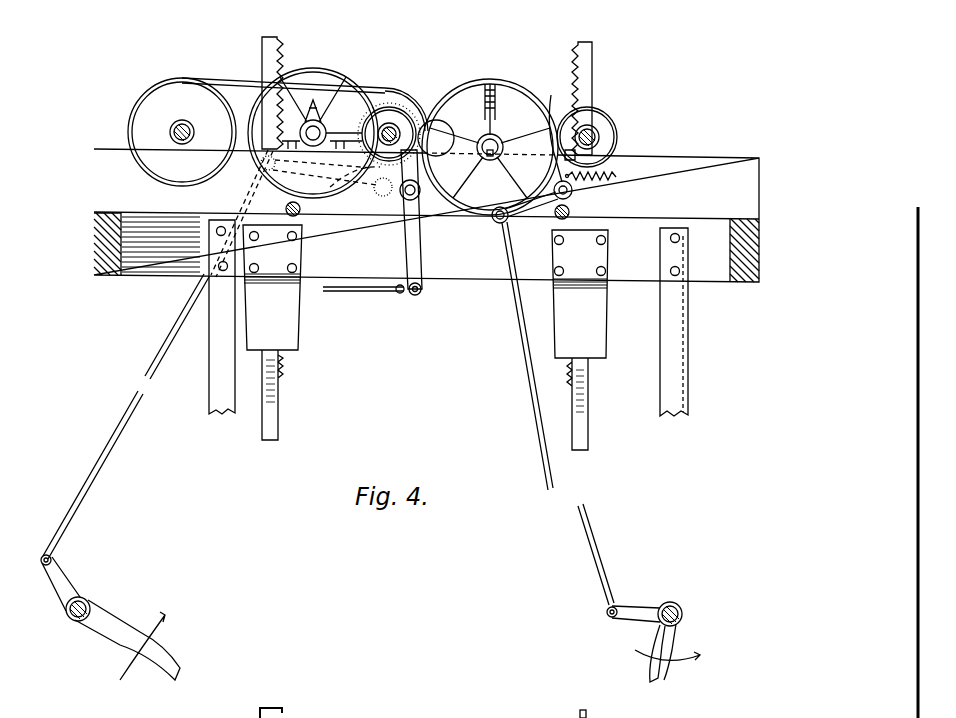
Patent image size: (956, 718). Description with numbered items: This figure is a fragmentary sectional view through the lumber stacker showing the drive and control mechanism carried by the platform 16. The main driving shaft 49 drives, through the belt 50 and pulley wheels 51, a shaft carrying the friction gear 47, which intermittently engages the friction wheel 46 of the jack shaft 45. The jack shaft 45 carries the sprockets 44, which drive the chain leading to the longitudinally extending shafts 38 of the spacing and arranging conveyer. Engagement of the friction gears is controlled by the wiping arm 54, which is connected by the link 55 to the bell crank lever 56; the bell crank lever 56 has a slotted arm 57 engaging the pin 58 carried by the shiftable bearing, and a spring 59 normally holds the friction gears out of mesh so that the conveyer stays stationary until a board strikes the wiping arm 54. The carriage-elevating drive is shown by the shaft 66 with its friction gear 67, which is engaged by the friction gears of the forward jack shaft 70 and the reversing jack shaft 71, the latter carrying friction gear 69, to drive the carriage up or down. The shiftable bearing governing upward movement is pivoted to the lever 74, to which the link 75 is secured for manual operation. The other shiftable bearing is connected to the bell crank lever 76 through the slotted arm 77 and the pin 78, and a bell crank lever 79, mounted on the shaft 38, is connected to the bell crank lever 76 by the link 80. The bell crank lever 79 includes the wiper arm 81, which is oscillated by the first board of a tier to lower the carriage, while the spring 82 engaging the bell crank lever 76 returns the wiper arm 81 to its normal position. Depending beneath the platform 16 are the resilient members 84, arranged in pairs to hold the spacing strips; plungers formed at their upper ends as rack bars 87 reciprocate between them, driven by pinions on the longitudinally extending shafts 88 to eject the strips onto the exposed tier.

The platform 16 is at (94, 242).
The longitudinally extending shaft 38 is at (85, 598).
The sprocket 44 is at (347, 93).
The jack shaft 45 is at (300, 140).
The friction wheel 46 is at (334, 70).
The friction gear 47 is at (445, 120).
The main driving shaft 49 is at (185, 145).
The belt 50 is at (212, 78).
The pulley wheel 51 is at (150, 94).
The wiping arm 54 is at (128, 628).
The link 55 is at (115, 445).
The bell crank lever 56 is at (345, 185).
The slotted arm 57 is at (342, 186).
The pin 58 is at (389, 105).
The spring 59 is at (400, 198).
The shaft 66 is at (493, 140).
The friction gear 67 is at (505, 83).
The friction gear 69 is at (612, 128).
The forward jack shaft 70 is at (392, 124).
The reversing jack shaft 71 is at (596, 135).
The lever 74 is at (424, 250).
The link 75 is at (380, 294).
The bell crank lever 76 is at (540, 208).
The slotted arm 77 is at (552, 98).
The pin 78 is at (575, 152).
The bell crank lever 79 is at (645, 610).
The link 80 is at (590, 540).
The wiper arm 81 is at (672, 680).
The spring 82 is at (597, 180).
The resilient member 84 is at (425, 337).
The rack bar 87 is at (283, 50).
The longitudinally extending shaft 88 is at (289, 206).